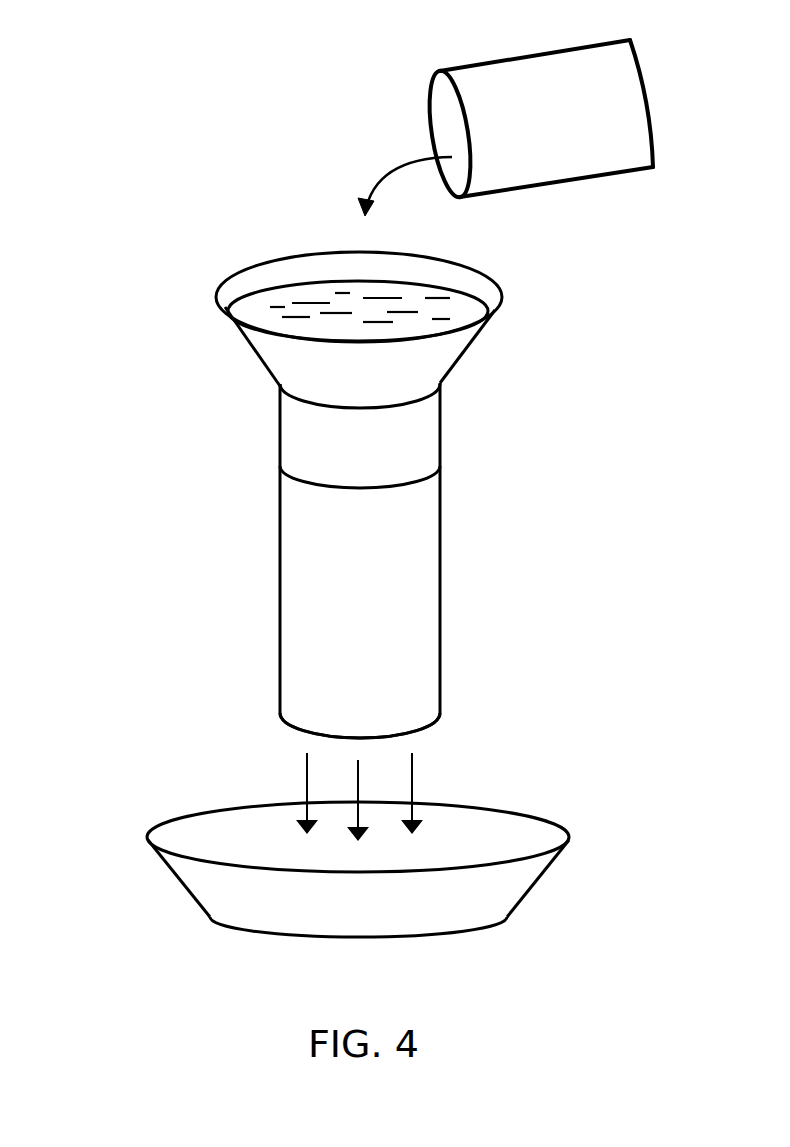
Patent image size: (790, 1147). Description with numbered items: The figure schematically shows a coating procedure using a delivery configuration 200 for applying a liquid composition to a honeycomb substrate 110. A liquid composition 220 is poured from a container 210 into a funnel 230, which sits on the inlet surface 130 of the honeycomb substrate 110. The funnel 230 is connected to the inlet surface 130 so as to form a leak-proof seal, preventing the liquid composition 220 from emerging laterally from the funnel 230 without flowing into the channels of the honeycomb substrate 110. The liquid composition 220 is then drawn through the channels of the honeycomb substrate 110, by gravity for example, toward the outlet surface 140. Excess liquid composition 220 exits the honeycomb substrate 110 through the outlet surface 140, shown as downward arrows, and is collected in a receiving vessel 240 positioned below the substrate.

The delivery configuration 200 is at (150, 157).
The container 210 is at (600, 172).
The liquid composition 220 is at (298, 302).
The funnel 230 is at (262, 363).
The inlet surface 130 is at (383, 482).
The honeycomb substrate 110 is at (443, 599).
The outlet surface 140 is at (425, 728).
The receiving vessel 240 is at (187, 890).